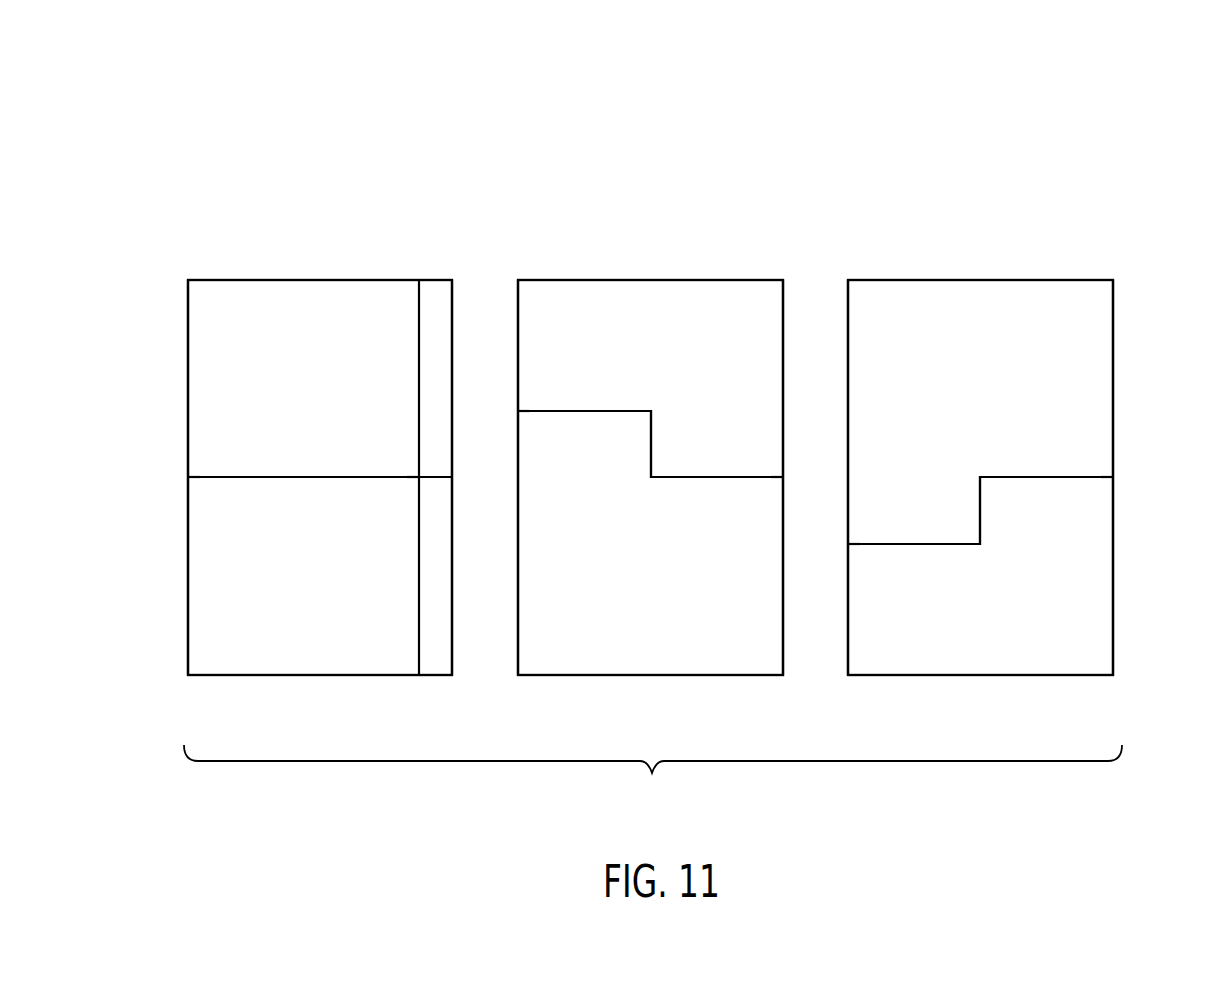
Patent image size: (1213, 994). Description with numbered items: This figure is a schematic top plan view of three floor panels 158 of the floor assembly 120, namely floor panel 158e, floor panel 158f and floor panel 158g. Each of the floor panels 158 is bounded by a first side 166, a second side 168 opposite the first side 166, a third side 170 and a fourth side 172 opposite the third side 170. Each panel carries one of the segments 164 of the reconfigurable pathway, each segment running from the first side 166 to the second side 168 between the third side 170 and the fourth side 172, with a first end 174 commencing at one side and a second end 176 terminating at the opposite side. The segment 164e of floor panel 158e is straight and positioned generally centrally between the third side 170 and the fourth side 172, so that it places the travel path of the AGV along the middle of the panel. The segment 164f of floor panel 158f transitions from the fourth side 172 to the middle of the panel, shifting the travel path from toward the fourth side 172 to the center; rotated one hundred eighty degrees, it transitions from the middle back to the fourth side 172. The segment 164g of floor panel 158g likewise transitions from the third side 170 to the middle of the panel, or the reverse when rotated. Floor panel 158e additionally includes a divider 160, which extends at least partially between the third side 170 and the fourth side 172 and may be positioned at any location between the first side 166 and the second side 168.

The floor assembly 120 is at (653, 776).
The floor panels 158 is at (689, 360).
The floor panel 158e is at (320, 279).
The floor panel 158f is at (650, 279).
The floor panel 158g is at (980, 279).
The divider 160 is at (419, 338).
The segments 164 is at (650, 313).
The segment 164e is at (305, 478).
The segment 164f is at (708, 478).
The segment 164g is at (940, 545).
The first side 166 is at (187, 657).
The second side 168 is at (452, 296).
The third side 170 is at (320, 678).
The fourth side 172 is at (228, 279).
The first end 174 is at (565, 427).
The second end 176 is at (720, 426).